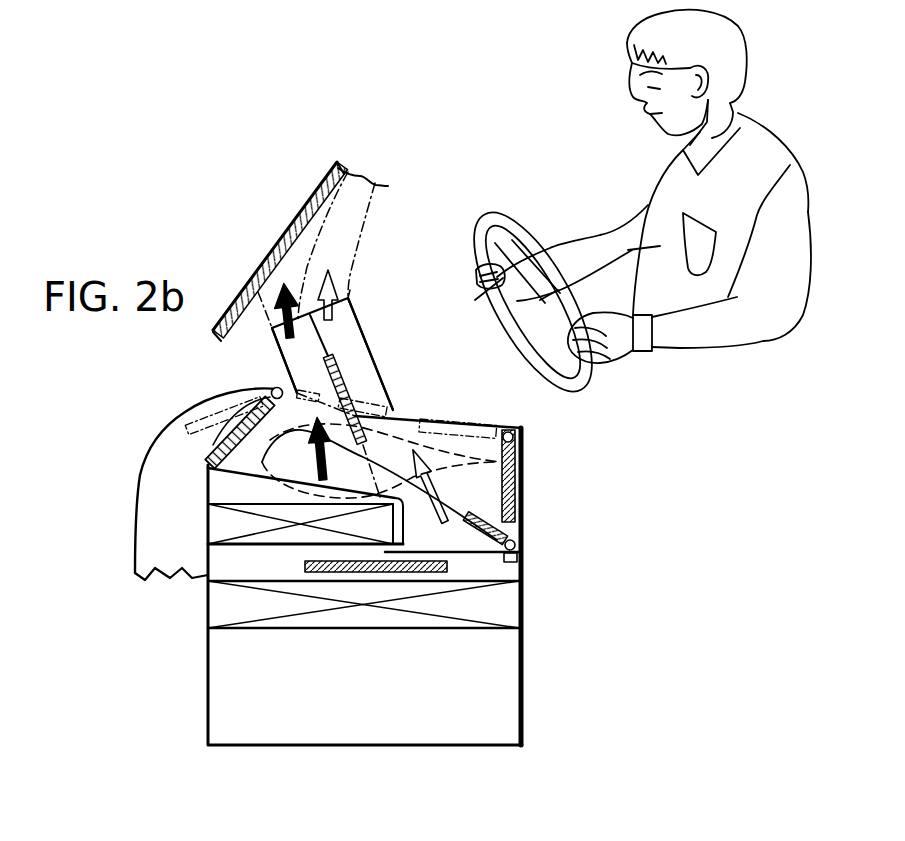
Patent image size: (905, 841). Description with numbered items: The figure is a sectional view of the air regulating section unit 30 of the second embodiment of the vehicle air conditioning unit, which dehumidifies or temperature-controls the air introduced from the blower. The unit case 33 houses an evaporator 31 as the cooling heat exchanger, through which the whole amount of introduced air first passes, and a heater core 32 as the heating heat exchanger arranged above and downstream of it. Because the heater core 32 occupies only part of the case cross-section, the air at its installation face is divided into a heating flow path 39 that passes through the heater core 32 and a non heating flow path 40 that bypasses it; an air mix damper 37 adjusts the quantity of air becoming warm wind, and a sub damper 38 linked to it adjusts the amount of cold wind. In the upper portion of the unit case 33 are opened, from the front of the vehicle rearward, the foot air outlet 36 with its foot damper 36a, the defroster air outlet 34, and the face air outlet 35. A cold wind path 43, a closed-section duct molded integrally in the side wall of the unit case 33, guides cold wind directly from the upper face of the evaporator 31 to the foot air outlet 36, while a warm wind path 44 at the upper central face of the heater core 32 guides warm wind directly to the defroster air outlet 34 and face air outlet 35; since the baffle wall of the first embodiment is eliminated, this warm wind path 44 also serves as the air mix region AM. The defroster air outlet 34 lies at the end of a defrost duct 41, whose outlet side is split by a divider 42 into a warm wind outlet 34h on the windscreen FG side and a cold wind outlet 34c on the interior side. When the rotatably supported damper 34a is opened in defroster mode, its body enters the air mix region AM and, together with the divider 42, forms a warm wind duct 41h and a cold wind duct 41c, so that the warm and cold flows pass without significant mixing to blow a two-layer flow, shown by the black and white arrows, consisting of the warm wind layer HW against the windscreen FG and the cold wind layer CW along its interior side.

The air regulating section unit 30 is at (200, 712).
The evaporator 31 is at (523, 608).
The heater core 32 is at (202, 517).
The unit case 33 is at (522, 678).
The defroster air outlet 34 is at (308, 297).
The rotatably supported damper 34a is at (350, 425).
The cold wind outlet 34c is at (348, 298).
The warm wind outlet 34h is at (270, 326).
The face air outlet 35 is at (515, 425).
The foot air outlet 36 is at (207, 463).
The foot damper 36a is at (213, 445).
The air mix damper 37 is at (437, 572).
The sub damper 38 is at (520, 522).
The heating flow path 39 is at (238, 563).
The non heating flow path 40 is at (488, 563).
The defrost duct 41 is at (372, 350).
The cold wind duct 41c is at (373, 378).
The warm wind duct 41h is at (298, 368).
The divider 42 is at (360, 335).
The cold wind path 43 is at (205, 508).
The warm wind path 44 is at (218, 405).
The air mix region AM is at (530, 456).
The windscreen FG is at (292, 228).
The warm wind layer HW is at (345, 177).
The cold wind layer CW is at (378, 180).